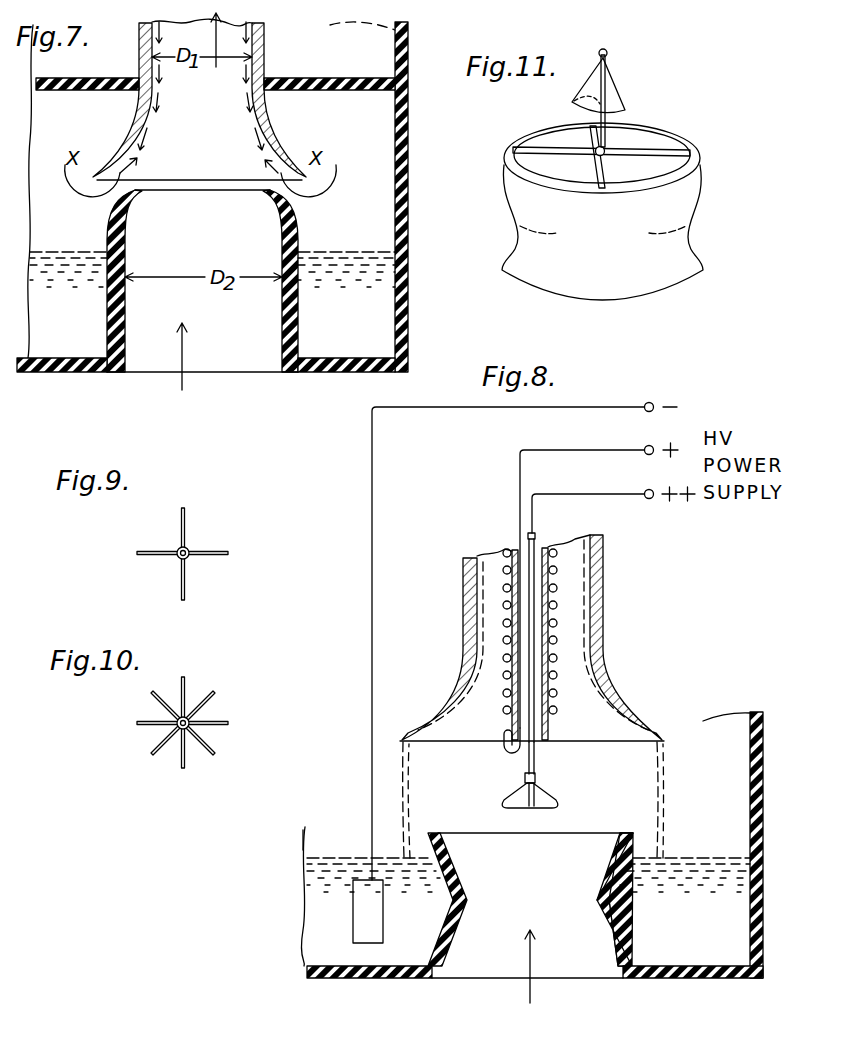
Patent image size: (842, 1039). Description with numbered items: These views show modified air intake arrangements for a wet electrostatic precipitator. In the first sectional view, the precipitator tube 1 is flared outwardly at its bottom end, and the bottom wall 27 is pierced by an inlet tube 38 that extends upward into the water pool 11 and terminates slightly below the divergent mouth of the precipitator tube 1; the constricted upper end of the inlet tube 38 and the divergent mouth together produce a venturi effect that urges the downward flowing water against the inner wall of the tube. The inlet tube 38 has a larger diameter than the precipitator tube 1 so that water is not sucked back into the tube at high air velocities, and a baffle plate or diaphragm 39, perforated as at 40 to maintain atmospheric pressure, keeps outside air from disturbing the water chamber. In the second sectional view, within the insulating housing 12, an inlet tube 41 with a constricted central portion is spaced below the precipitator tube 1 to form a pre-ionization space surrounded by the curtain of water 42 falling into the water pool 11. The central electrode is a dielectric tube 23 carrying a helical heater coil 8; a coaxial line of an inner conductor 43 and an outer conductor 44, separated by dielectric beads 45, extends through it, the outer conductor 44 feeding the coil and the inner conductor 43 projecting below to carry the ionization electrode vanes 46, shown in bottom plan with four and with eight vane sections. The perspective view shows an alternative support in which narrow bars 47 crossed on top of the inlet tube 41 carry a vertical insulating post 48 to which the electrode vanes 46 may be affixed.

In FIG. 7, the precipitator tube 1 is at (267, 50).
In FIG. 8, the precipitator tube 1 is at (597, 598).
In FIG. 7, the perforation 40 is at (300, 78).
In FIG. 7, the baffle plate or diaphragm 39 is at (342, 92).
In FIG. 7, the inlet tube 38 is at (287, 226).
In FIG. 7, the bottom wall 27 is at (60, 372).
In FIG. 8, the bottom wall 27 is at (333, 978).
In FIG. 11, the ionization electrode vanes 46 is at (620, 83).
In FIG. 8, the ionization electrode vanes 46 is at (540, 795).
In FIG. 11, the vertical insulating post 48 is at (604, 138).
In FIG. 11, the narrow bars 47 is at (653, 147).
In FIG. 11, the inlet tube 41 is at (690, 173).
In FIG. 8, the inlet tube 41 is at (435, 832).
In FIG. 8, the dielectric beads 45 is at (522, 573).
In FIG. 8, the outer conductor 44 is at (550, 628).
In FIG. 8, the helical heater coil 8 is at (553, 662).
In FIG. 8, the dielectric tube 23 is at (547, 736).
In FIG. 9, the inner conductor 43 is at (188, 550).
In FIG. 10, the inner conductor 43 is at (190, 720).
In FIG. 8, the inner conductor 43 is at (526, 760).
In FIG. 8, the curtain of water 42 is at (664, 778).
In FIG. 8, the housing 12 is at (758, 768).
In FIG. 8, the water pool 11 is at (710, 867).